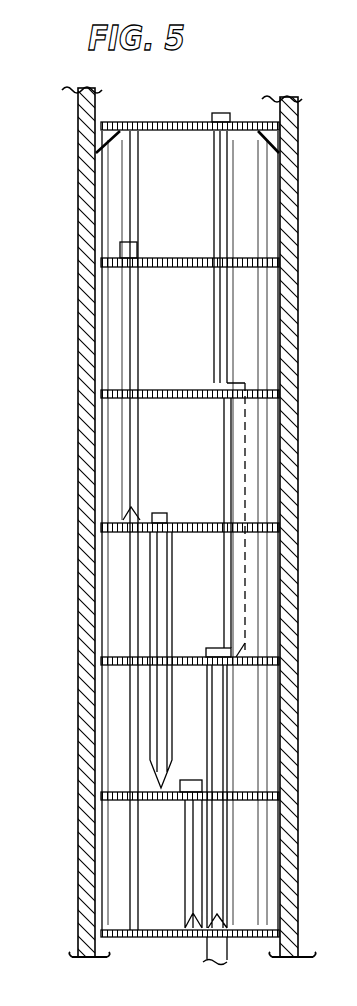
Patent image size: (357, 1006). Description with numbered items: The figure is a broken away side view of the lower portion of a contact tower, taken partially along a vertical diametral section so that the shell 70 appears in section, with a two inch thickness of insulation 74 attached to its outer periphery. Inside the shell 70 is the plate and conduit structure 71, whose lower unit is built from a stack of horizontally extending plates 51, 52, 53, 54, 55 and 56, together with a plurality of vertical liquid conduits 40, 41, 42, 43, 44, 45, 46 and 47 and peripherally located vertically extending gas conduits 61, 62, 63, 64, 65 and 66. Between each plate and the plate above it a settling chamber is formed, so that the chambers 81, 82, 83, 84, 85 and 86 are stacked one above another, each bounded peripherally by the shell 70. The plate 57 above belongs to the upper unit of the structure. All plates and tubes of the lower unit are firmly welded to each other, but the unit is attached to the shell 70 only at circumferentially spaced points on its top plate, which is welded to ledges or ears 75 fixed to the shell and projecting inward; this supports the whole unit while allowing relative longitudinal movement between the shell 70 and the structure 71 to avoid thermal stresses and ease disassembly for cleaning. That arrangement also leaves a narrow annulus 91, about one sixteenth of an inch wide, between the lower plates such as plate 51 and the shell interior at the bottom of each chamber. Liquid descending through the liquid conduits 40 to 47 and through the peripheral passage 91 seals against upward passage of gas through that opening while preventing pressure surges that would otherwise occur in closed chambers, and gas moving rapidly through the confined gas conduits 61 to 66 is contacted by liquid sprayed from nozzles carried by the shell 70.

The vertical liquid conduit 40 is at (230, 946).
The vertical liquid conduit 41 is at (222, 700).
The vertical liquid conduit 42 is at (185, 883).
The vertical liquid conduit 43 is at (150, 712).
The vertical liquid conduit 44 is at (223, 461).
The vertical liquid conduit 45 is at (228, 597).
The vertical liquid conduit 46 is at (213, 321).
The vertical liquid conduit 47 is at (122, 333).
The plate 51 is at (125, 940).
The plate 52 is at (132, 793).
The plate 53 is at (182, 656).
The plate 54 is at (190, 523).
The plate 55 is at (178, 391).
The plate 56 is at (184, 258).
The plate 57 is at (176, 122).
The gas conduit 61 is at (268, 809).
The gas conduit 62 is at (117, 836).
The gas conduit 63 is at (268, 731).
The gas conduit 64 is at (100, 546).
The gas conduit 65 is at (268, 416).
The gas conduit 66 is at (108, 296).
The shell 70 is at (64, 447).
The plate and conduit structure 71 is at (238, 73).
The insulation 74 is at (296, 372).
The ledge 75 is at (100, 141).
The settling chamber 81 is at (176, 847).
The settling chamber 82 is at (201, 716).
The settling chamber 83 is at (210, 581).
The settling chamber 84 is at (190, 442).
The settling chamber 85 is at (188, 311).
The settling chamber 86 is at (191, 199).
The annulus 91 is at (100, 881).